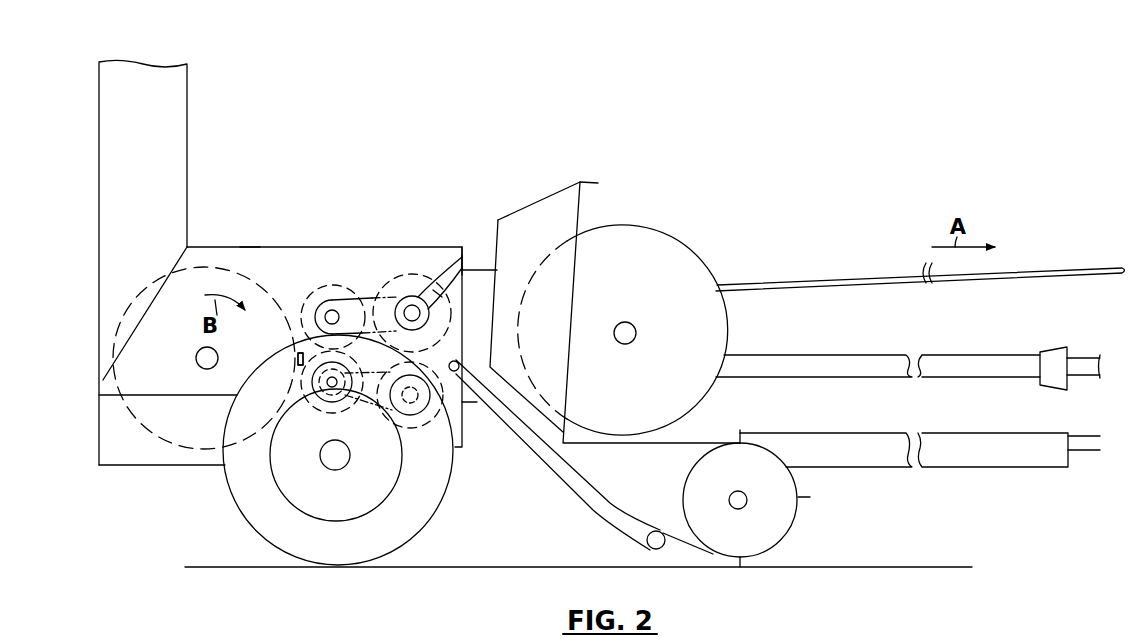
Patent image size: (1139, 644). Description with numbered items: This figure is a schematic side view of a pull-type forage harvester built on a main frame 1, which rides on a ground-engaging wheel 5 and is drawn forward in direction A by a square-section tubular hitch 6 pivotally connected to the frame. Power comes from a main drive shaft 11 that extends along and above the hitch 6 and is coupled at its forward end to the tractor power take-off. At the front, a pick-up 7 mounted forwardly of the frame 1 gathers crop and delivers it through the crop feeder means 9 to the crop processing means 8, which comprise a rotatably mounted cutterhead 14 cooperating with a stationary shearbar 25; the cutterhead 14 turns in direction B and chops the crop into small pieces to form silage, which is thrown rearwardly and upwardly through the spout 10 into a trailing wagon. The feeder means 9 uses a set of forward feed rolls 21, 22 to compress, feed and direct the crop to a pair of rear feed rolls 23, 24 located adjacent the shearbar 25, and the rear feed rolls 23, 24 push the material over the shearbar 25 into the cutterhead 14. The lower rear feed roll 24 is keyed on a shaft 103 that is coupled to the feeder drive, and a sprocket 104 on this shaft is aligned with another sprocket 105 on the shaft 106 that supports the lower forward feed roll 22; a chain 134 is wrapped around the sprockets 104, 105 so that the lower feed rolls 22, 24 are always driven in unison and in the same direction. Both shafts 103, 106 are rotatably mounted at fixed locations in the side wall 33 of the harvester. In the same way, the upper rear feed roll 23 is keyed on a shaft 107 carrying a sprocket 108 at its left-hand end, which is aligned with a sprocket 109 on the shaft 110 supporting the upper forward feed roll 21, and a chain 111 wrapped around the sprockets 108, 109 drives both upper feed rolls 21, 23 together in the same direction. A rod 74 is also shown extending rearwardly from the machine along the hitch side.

The main frame 1 is at (132, 472).
The ground-engaging wheel 5 is at (443, 483).
The tubular hitch 6 is at (1020, 468).
The pick-up 7 is at (796, 524).
The crop processing means 8 is at (188, 455).
The crop feeder means 9 is at (437, 243).
The spout 10 is at (190, 121).
The main drive shaft 11 is at (1082, 385).
The cutterhead 14 is at (216, 265).
The upper forward feed roll 21 is at (423, 273).
The lower forward feed roll 22 is at (430, 420).
The upper rear feed roll 23 is at (367, 297).
The lower rear feed roll 24 is at (318, 393).
The shearbar 25 is at (297, 320).
The side wall 33 is at (250, 243).
The rod 74 is at (778, 286).
The shaft 103 is at (343, 400).
The sprocket 104 is at (333, 395).
The sprocket 105 is at (433, 413).
The shaft 106 is at (430, 387).
The shaft 107 is at (340, 303).
The sprocket 108 is at (313, 307).
The sprocket 109 is at (470, 262).
The shaft 110 is at (465, 245).
The chain 111 is at (378, 297).
The chain 134 is at (407, 407).